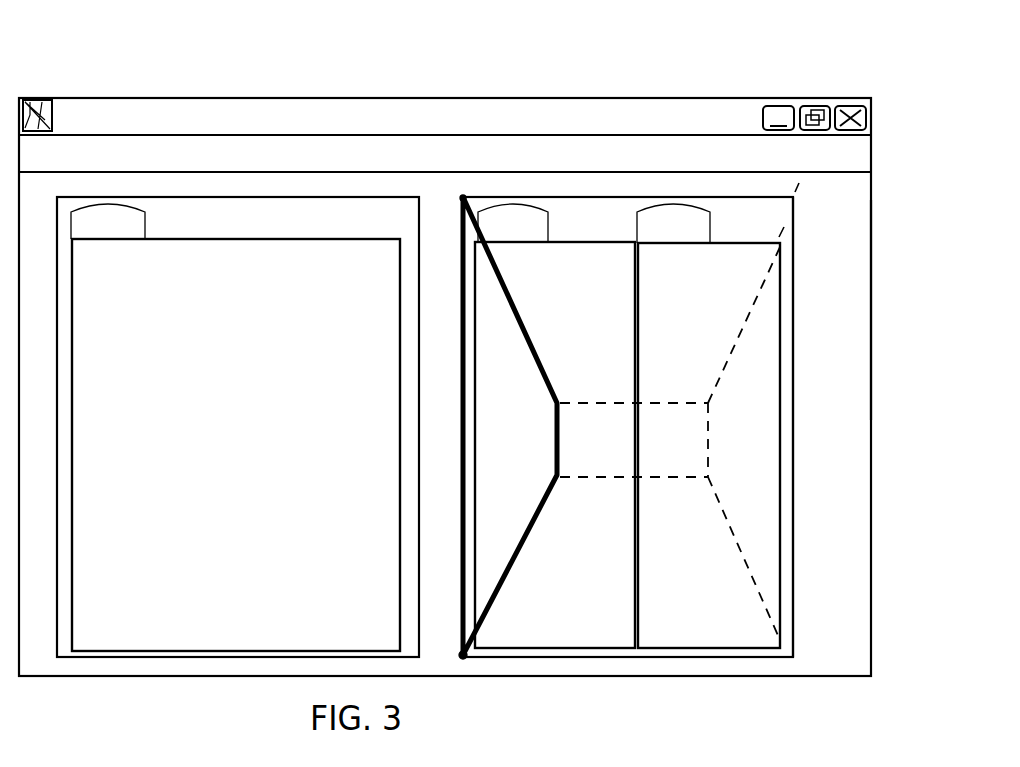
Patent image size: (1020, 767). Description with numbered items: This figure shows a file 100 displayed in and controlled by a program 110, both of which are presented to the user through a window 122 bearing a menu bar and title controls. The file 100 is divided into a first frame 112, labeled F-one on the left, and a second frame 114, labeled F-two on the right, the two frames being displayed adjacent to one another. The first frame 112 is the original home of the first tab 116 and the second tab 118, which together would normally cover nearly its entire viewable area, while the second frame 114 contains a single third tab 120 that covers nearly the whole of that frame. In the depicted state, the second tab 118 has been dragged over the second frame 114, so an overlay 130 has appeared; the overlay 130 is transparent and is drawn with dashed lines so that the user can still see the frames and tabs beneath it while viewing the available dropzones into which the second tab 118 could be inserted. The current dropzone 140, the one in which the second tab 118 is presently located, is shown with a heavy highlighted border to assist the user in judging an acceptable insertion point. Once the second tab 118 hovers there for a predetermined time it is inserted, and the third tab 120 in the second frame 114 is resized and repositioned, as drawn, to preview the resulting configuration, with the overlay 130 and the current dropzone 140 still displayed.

The file 100 is at (836, 221).
The program 110 is at (873, 148).
The frame 1 112 is at (148, 197).
The second frame 114 is at (795, 311).
The TAB 1 116 is at (235, 239).
The TAB 2 118 is at (597, 242).
The TAB 3 120 is at (782, 548).
The window 122 is at (871, 298).
The overlay 130 is at (744, 423).
The current dropzone 140 is at (460, 430).